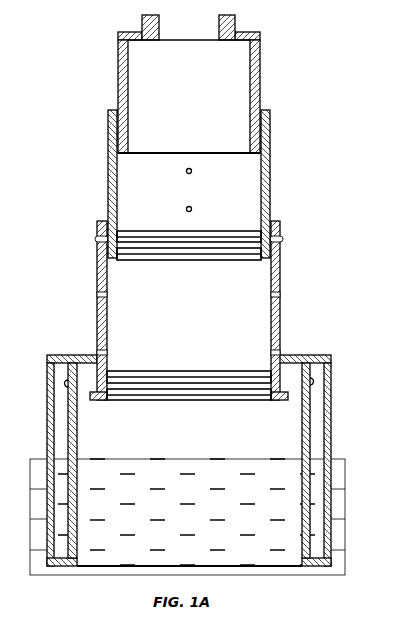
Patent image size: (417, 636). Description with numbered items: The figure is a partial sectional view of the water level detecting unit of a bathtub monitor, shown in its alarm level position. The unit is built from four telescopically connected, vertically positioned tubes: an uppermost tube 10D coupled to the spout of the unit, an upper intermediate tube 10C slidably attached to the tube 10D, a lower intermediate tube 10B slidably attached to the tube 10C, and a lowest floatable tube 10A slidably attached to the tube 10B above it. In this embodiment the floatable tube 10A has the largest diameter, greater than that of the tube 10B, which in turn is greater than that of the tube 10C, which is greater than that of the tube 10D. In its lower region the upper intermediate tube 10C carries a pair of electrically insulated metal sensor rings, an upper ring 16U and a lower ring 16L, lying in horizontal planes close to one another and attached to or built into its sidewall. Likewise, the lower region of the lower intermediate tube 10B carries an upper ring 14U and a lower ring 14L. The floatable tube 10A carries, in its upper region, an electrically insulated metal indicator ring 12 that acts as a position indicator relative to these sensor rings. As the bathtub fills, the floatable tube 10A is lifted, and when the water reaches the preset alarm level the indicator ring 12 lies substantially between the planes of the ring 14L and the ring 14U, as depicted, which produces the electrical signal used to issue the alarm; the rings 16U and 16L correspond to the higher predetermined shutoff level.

The lowest floatable tube 10A is at (326, 533).
The lower intermediate tube 10B is at (205, 326).
The upper intermediate tube 10C is at (183, 194).
The uppermost tube 10D is at (118, 77).
The indicator ring 12 is at (67, 382).
The upper ring 14U is at (257, 376).
The lower ring 14L is at (262, 392).
The upper ring 16U is at (247, 235).
The lower ring 16L is at (247, 251).